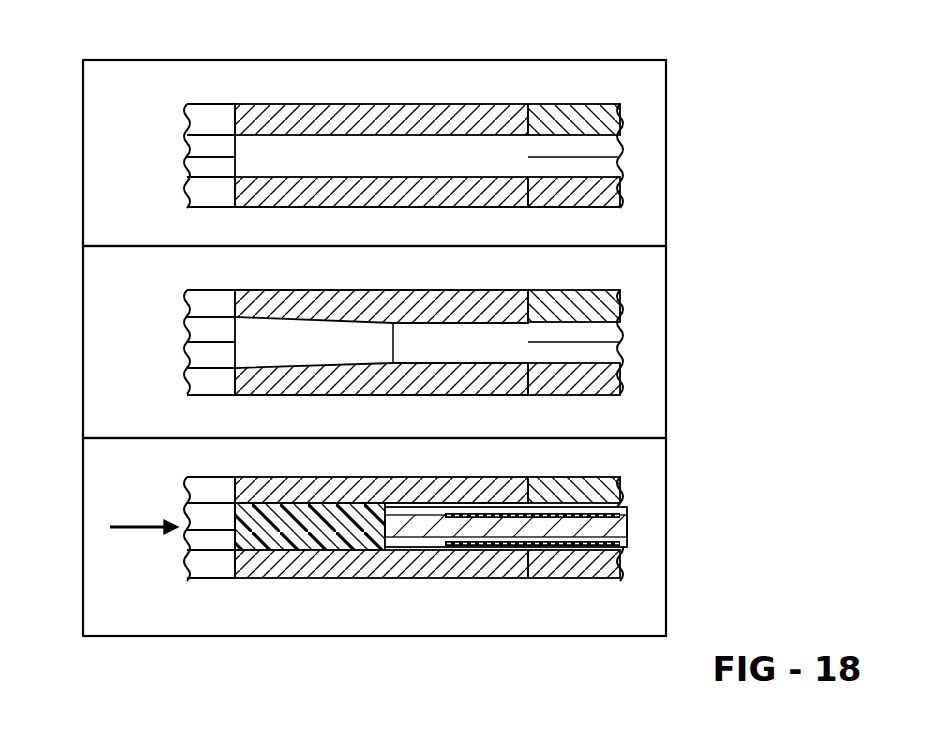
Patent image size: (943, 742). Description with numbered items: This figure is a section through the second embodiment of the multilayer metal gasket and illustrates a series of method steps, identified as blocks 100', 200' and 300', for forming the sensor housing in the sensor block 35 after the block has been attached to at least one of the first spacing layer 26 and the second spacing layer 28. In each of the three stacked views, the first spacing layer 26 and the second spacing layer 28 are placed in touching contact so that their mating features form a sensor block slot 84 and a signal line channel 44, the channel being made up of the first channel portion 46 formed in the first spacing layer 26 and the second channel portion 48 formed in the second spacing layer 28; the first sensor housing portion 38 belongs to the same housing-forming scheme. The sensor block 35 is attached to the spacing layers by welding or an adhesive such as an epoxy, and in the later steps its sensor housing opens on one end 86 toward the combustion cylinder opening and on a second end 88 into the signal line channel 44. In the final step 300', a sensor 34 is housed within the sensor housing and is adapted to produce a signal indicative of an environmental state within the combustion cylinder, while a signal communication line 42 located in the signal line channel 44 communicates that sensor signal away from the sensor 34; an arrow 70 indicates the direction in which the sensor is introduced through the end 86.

The first spacing layer 26 is at (441, 106).
The second spacing layer 28 is at (605, 396).
The sensor 34 is at (290, 545).
The sensor block 35 is at (320, 106).
The first sensor housing portion 38 is at (598, 207).
The signal communication line 42 is at (418, 540).
The signal line channel 44 is at (432, 333).
The first channel portion 46 is at (488, 146).
The second channel portion 48 is at (600, 176).
The insertion direction arrow 70 is at (127, 529).
The sensor block slot 84 is at (283, 501).
The one end of sensor housing 86 is at (233, 334).
The second end of sensor housing 88 is at (512, 330).
The block 100' is at (431, 153).
The block 200' is at (436, 344).
The block 300' is at (442, 537).